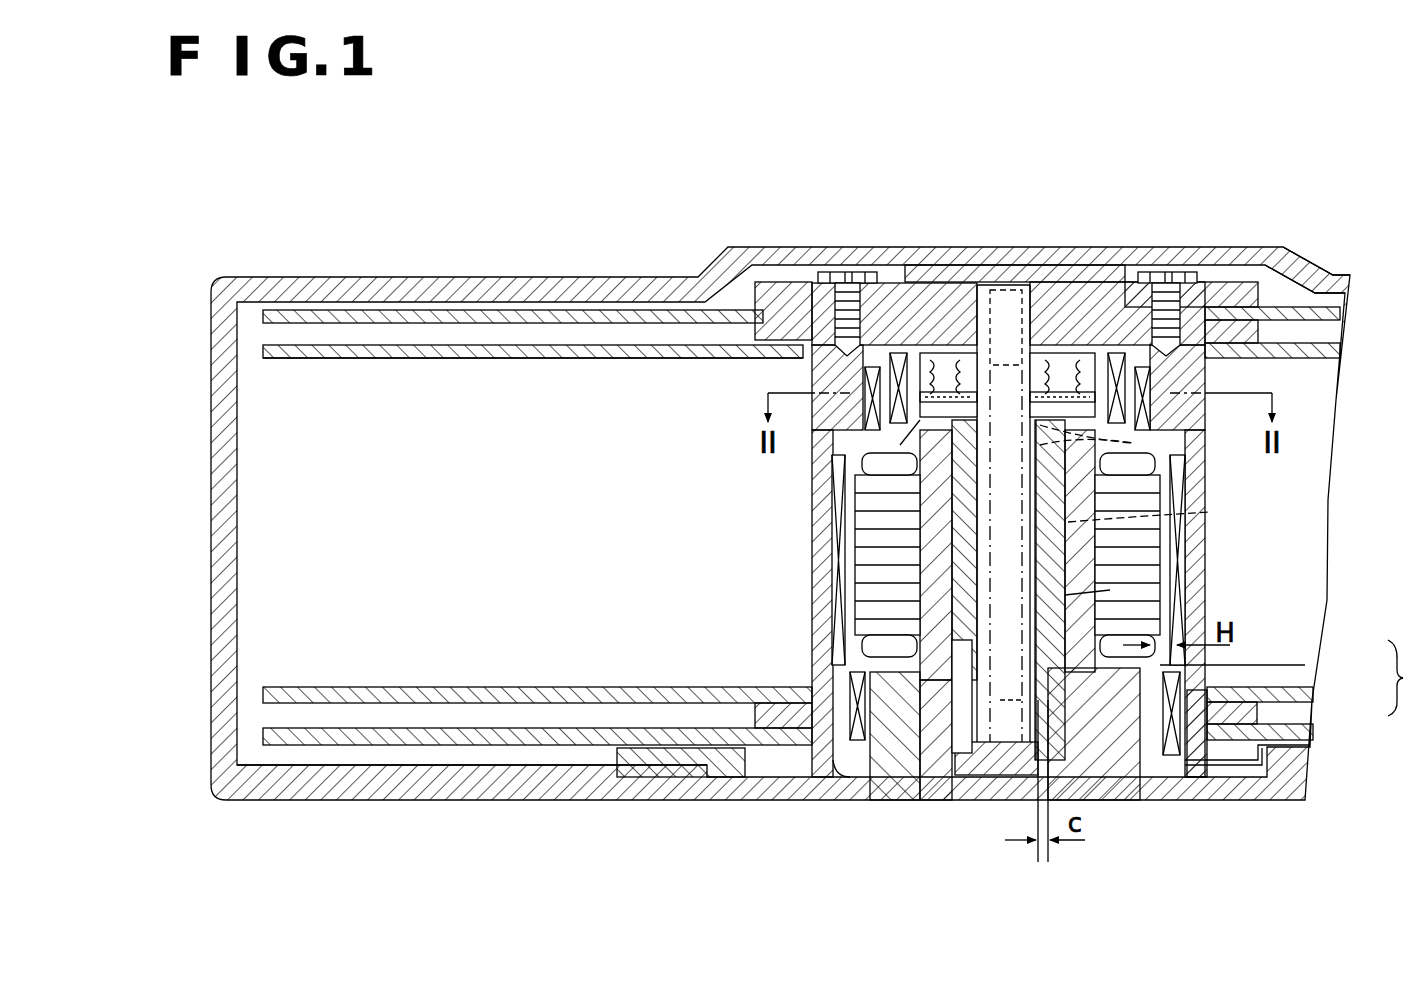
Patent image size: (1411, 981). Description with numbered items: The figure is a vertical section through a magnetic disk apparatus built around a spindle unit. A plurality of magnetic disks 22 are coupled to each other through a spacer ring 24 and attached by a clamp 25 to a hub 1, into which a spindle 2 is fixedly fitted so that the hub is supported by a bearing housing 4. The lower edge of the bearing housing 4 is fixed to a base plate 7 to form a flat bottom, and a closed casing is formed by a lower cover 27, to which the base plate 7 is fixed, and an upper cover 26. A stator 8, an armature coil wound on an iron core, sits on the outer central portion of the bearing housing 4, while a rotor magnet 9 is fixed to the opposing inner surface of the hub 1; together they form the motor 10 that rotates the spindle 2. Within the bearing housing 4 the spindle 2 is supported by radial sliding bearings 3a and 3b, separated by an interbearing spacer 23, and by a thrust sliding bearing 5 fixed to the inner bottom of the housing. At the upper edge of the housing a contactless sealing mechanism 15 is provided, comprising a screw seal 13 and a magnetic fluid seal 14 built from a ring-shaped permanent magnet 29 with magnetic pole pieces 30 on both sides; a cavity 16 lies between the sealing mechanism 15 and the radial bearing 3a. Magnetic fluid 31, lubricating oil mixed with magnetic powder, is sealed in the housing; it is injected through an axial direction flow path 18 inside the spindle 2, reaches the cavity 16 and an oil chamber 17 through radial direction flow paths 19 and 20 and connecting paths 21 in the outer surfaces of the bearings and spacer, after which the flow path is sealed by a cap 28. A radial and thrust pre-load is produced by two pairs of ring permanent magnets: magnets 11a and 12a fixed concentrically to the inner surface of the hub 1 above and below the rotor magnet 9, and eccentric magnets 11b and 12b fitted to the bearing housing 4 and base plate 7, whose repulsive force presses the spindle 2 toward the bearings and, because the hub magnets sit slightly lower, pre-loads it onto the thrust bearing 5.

The hub 1 is at (965, 300).
The spindle 2 is at (1045, 300).
The radial sliding bearing 3a is at (957, 478).
The radial sliding bearing 3b is at (920, 688).
The bearing housing 4 is at (1095, 735).
The thrust sliding bearing 5 is at (1012, 760).
The base plate 7 is at (858, 792).
The stator 8 is at (868, 528).
The rotor magnet 9 is at (840, 566).
The motor 10 is at (948, 559).
The permanent magnet 11a is at (845, 432).
The permanent magnet 11b is at (865, 375).
The permanent magnet 12a is at (1252, 715).
The permanent magnet 12b is at (1305, 667).
The screw seal 13 is at (950, 360).
The magnetic fluid seal 14 is at (935, 360).
The sealing mechanism 15 is at (983, 284).
The cavity 16 is at (1150, 430).
The oil chamber 17 is at (965, 770).
The axial direction flow path 18 is at (1060, 380).
The radial direction flow path 19 is at (1133, 443).
The radial direction flow path 20 is at (1175, 517).
The connecting paths 21 is at (1070, 588).
The magnetic disks 22 is at (582, 310).
The interbearing spacer 23 is at (950, 617).
The spacer ring 24 is at (745, 320).
The clamp 25 is at (1215, 295).
The upper cover 26 is at (492, 277).
The lower cover 27 is at (535, 795).
The cap 28 is at (1010, 320).
The ring-shaped permanent magnet 29 is at (1080, 400).
The magnetic pole pieces 30 is at (1085, 380).
The magnetic fluid 31 is at (1000, 700).